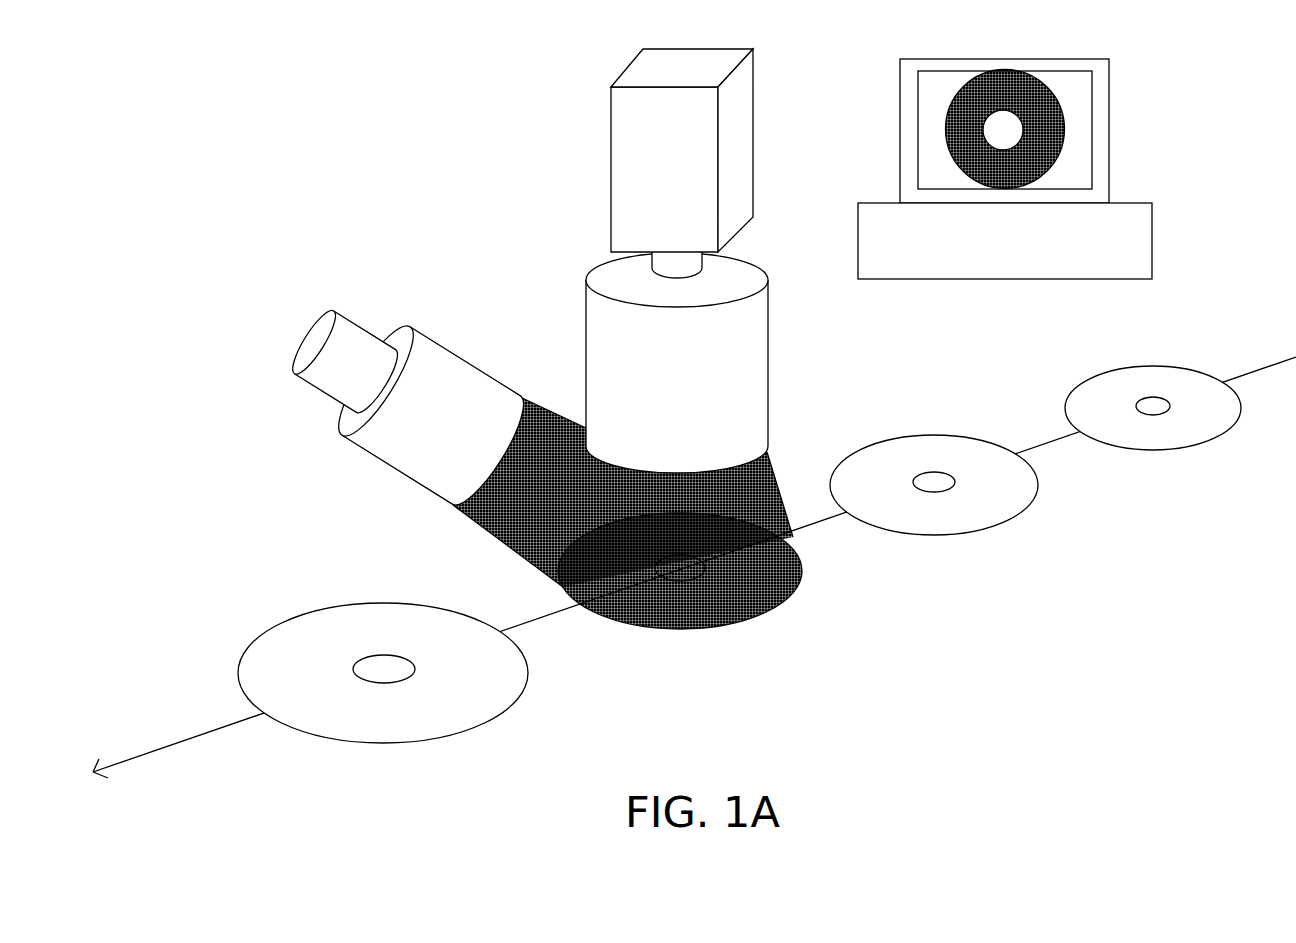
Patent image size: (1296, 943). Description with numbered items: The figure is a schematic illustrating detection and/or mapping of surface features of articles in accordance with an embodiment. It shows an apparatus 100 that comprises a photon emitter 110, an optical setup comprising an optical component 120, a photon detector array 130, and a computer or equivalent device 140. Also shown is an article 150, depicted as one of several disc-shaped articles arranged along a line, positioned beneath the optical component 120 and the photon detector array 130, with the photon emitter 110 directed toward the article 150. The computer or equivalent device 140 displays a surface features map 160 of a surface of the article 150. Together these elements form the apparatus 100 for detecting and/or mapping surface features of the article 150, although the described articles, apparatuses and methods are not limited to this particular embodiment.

The apparatus 100 is at (178, 180).
The photon emitter 110 is at (423, 457).
The optical component 120 is at (620, 358).
The photon detector array 130 is at (647, 188).
The computer or equivalent device 140 is at (905, 222).
The article 150 is at (710, 605).
The surface features map 160 is at (1032, 154).